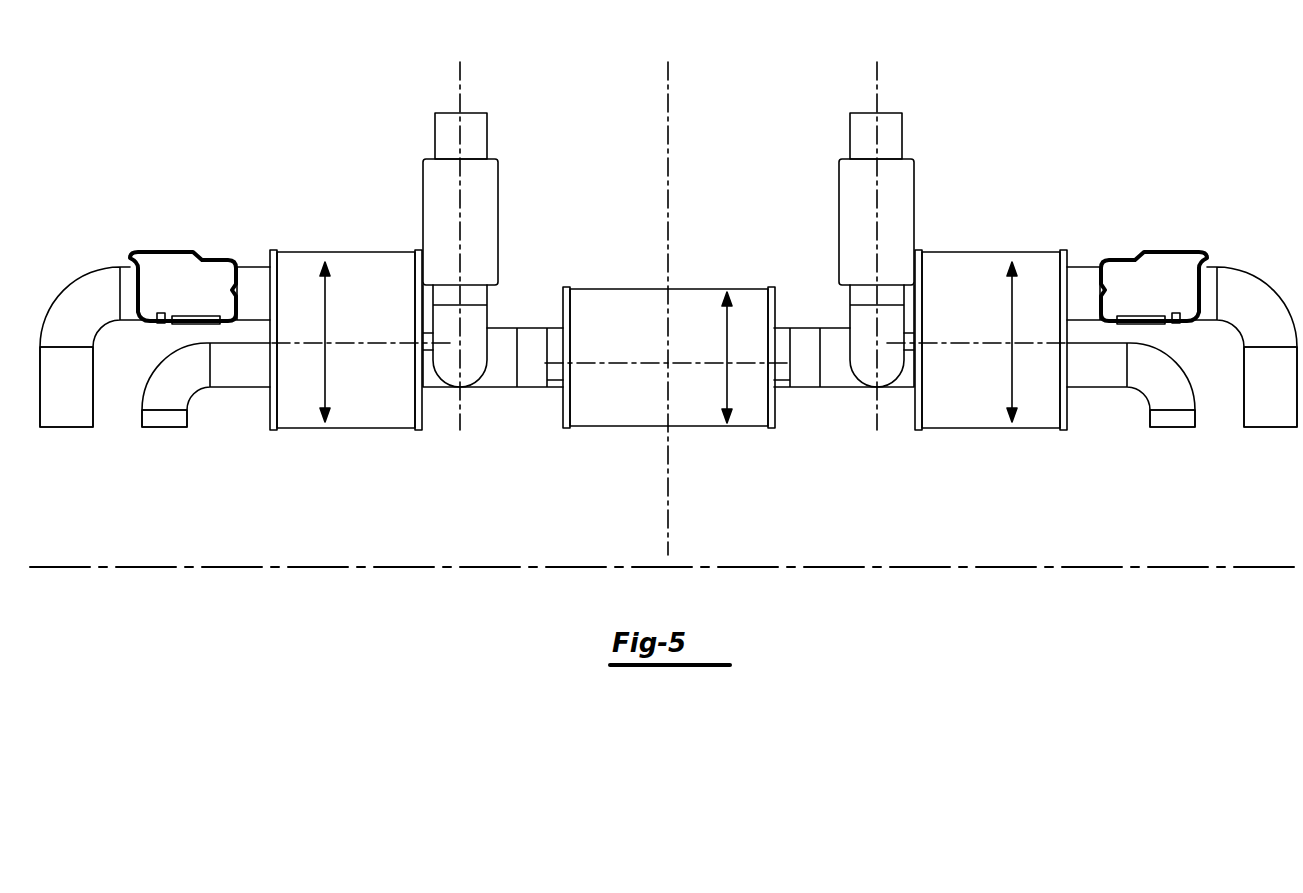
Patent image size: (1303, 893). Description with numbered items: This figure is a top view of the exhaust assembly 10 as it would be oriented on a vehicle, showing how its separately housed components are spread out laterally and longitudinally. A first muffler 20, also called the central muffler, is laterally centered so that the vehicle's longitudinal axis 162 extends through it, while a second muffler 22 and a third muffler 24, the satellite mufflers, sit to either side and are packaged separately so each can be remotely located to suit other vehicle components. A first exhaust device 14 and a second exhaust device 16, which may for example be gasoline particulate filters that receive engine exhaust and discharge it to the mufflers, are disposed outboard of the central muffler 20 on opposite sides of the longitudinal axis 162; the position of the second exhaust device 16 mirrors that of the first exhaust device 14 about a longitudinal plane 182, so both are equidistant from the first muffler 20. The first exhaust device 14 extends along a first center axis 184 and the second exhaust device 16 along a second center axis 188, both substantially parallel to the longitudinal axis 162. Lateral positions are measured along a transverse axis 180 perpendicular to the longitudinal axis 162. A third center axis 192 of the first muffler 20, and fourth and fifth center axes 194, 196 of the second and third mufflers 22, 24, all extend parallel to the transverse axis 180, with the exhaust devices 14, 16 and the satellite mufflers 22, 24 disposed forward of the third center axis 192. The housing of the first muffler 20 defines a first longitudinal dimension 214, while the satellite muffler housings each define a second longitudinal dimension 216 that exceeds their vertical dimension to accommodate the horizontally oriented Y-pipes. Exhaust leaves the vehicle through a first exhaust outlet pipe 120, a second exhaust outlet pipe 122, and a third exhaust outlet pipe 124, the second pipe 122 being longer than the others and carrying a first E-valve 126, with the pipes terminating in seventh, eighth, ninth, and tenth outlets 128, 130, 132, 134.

The exhaust assembly 10 is at (218, 68).
The first exhaust device 14 is at (887, 234).
The second exhaust device 16 is at (450, 239).
The first muffler 20 is at (668, 366).
The second muffler 22 is at (977, 355).
The third muffler 24 is at (360, 358).
The first exhaust outlet pipe 120 is at (1143, 355).
The second exhaust outlet pipe 122 is at (1257, 295).
The third exhaust outlet pipe 124 is at (192, 353).
The first E-valve 126 is at (80, 292).
The seventh outlet 128 is at (1163, 432).
The eighth outlet 130 is at (1272, 432).
The ninth outlet 132 is at (150, 432).
The tenth outlet 134 is at (62, 432).
The longitudinal axis 162 is at (747, 303).
The transverse axis 180 is at (1275, 570).
The longitudinal plane 182 is at (668, 95).
The first center axis 184 is at (877, 80).
The second center axis 188 is at (458, 82).
The third center axis 192 is at (625, 362).
The fourth center axis 194 is at (1030, 340).
The fifth center axis 196 is at (300, 340).
The first longitudinal dimension 214 is at (729, 380).
The second longitudinal dimension 216 is at (330, 390).